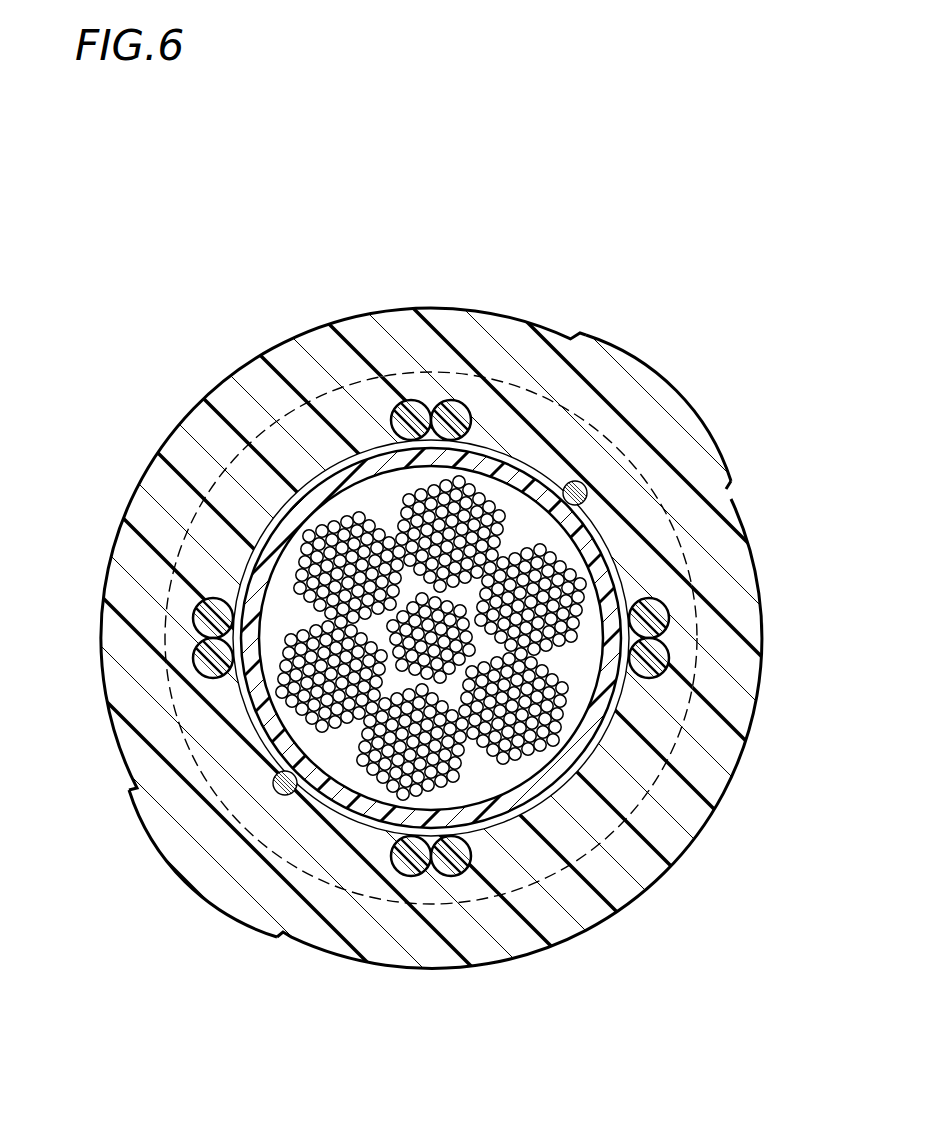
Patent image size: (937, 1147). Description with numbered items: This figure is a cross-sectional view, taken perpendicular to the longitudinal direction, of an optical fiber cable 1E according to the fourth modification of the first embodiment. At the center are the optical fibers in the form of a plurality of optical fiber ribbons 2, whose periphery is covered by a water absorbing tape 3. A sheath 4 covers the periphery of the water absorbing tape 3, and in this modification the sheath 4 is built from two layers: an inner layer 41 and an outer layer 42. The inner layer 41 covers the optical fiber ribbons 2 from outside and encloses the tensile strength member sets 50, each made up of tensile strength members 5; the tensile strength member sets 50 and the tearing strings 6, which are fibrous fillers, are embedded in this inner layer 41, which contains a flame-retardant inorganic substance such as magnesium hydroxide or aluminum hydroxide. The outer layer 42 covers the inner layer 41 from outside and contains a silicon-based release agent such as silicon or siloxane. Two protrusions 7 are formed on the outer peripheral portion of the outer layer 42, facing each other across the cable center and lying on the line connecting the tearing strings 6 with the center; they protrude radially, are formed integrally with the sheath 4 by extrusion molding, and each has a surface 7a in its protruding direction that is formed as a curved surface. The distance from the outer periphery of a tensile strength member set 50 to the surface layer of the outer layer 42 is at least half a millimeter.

The optical fiber cable 1E is at (468, 611).
The optical fiber ribbons 2 is at (558, 480).
The water absorbing tape 3 is at (600, 540).
The sheath 4 is at (468, 625).
The inner layer 41 is at (600, 827).
The outer layer 42 is at (468, 625).
The tensile strength members 5 is at (407, 401).
The tensile strength member sets 50 is at (433, 645).
The tearing string 6 is at (585, 493).
The protrusions 7 is at (441, 632).
The surface 7a is at (650, 368).